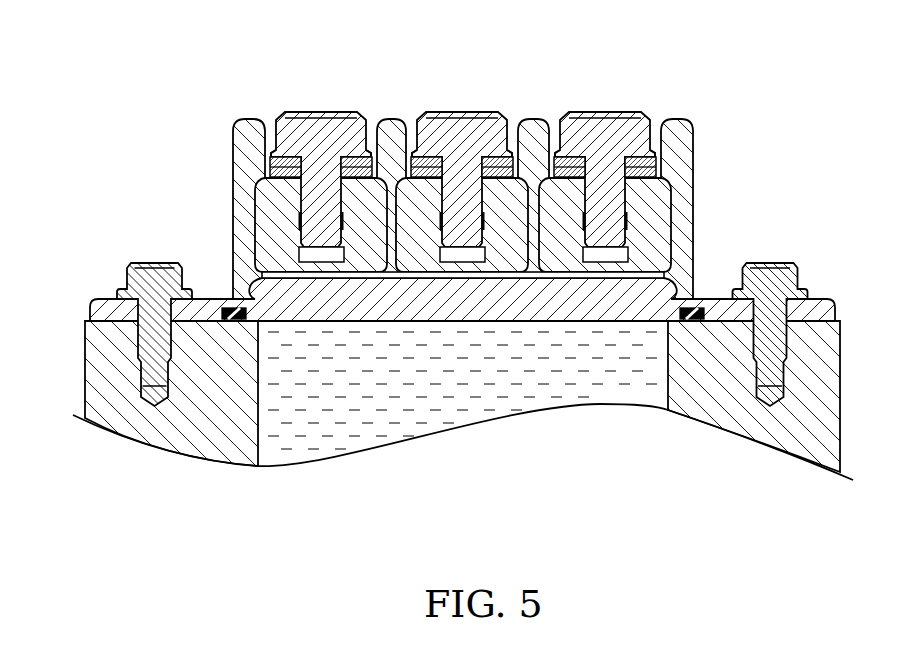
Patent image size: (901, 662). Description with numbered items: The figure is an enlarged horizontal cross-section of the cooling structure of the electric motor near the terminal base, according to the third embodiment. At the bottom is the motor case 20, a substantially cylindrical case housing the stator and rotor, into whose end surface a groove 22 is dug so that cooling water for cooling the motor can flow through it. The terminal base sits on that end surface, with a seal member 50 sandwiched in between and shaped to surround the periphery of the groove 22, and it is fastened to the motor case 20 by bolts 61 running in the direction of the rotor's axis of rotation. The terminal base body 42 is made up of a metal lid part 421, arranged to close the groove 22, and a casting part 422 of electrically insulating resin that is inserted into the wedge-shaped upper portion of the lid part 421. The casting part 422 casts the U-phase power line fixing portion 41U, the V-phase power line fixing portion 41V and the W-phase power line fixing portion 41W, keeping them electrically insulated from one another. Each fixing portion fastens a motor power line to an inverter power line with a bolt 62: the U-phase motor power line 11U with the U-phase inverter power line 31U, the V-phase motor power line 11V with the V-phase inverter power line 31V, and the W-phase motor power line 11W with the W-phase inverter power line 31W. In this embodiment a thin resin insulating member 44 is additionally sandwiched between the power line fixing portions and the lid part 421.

The motor case 20 is at (838, 407).
The groove 22 is at (662, 370).
The terminal base body 42 is at (462, 220).
The lid part 421 is at (722, 297).
The casting part 422 is at (690, 218).
The insulating member 44 is at (684, 271).
The seal member 50 is at (232, 307).
The bolt 61 is at (150, 262).
The bolt 62 is at (316, 112).
The U-phase motor power line 11U is at (272, 155).
The V-phase motor power line 11V is at (498, 156).
The W-phase motor power line 11W is at (659, 157).
The U-phase inverter power line 31U is at (268, 171).
The V-phase inverter power line 31V is at (414, 170).
The W-phase inverter power line 31W is at (657, 169).
The U-phase power line fixing portion 41U is at (256, 198).
The V-phase power line fixing portion 41V is at (529, 190).
The W-phase power line fixing portion 41W is at (673, 192).